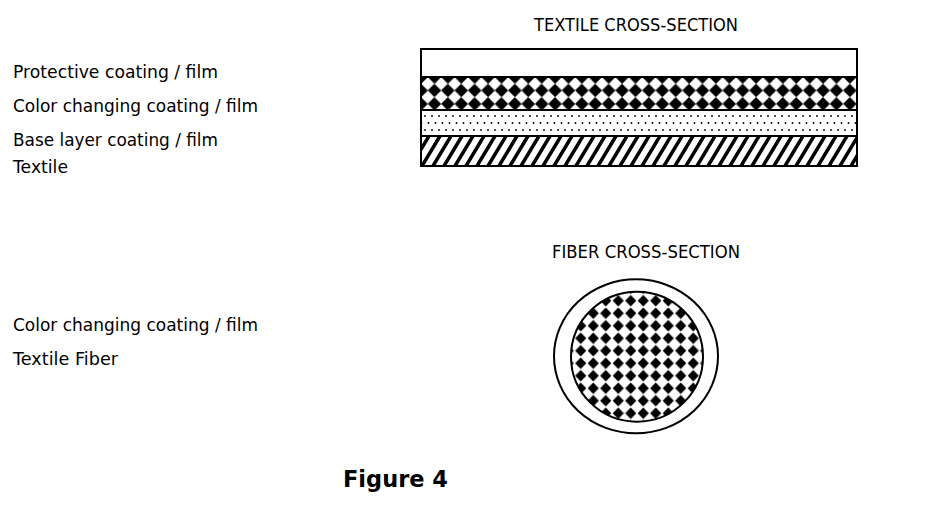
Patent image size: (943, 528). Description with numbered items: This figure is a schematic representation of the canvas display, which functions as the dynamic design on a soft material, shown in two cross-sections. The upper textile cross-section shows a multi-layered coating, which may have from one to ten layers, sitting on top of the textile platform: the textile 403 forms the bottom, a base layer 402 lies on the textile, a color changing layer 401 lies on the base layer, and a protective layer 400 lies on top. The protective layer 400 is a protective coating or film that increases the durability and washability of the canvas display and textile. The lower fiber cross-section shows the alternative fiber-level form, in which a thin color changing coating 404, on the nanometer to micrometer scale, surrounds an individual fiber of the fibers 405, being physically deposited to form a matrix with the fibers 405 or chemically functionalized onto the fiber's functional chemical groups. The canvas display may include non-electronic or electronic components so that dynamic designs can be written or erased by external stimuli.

The protective layer 400 is at (421, 67).
The color changing layer 401 is at (421, 93).
The base layer 402 is at (421, 126).
The textile 403 is at (421, 151).
The fiber-level color changing coating 404 is at (562, 323).
The fibers 405 is at (572, 355).